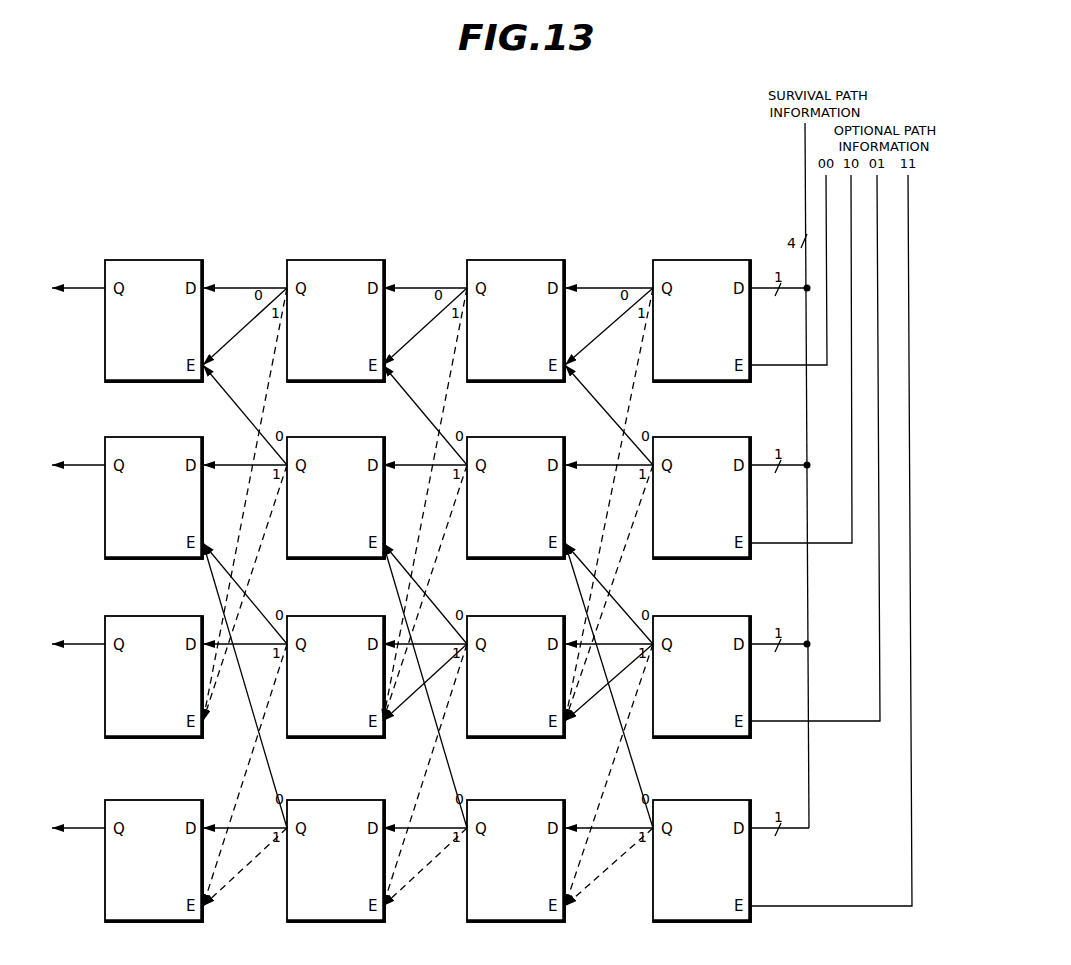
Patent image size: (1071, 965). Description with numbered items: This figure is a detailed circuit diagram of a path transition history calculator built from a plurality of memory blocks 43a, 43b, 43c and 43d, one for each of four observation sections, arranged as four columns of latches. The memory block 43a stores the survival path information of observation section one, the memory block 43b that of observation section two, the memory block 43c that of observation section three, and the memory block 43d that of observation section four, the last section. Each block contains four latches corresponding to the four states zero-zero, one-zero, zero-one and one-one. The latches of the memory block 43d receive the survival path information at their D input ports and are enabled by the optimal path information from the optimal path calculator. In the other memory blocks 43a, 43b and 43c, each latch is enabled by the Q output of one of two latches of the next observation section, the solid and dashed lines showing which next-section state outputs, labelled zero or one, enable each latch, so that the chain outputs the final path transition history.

The memory block 43a is at (105, 929).
The memory block 43b is at (287, 929).
The memory block 43c is at (467, 929).
The memory block 43d is at (653, 929).